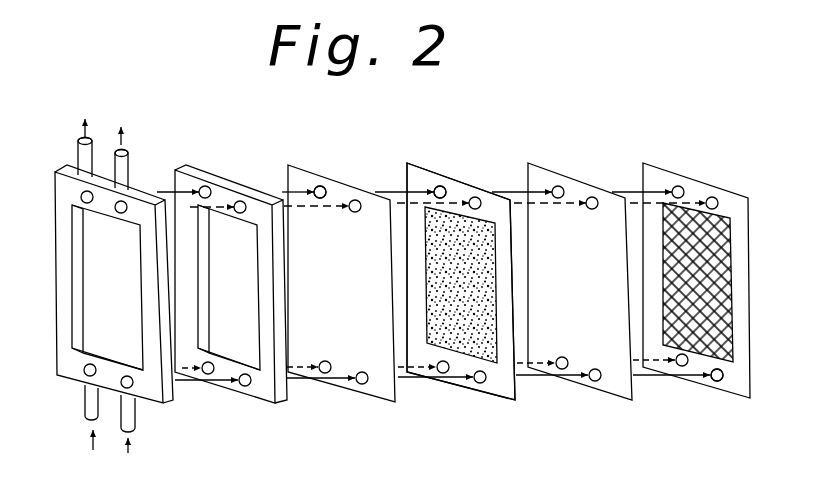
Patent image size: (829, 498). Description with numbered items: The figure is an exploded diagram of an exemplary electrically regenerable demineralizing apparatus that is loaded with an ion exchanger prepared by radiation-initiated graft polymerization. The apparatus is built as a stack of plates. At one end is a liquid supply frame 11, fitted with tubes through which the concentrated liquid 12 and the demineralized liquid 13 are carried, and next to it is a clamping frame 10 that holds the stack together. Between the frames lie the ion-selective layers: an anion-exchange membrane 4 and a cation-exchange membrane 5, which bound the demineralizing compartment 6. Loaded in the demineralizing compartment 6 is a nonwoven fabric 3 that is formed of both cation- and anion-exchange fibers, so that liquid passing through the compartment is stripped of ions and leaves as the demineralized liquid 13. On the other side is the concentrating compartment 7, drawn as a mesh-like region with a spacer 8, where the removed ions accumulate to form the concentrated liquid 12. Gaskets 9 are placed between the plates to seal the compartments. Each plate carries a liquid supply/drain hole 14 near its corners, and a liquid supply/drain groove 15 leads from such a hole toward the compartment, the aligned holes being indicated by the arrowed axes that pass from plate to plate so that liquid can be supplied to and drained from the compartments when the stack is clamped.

The nonwoven fabric 3 is at (466, 328).
The anion-exchange membrane 4 is at (378, 388).
The cation-exchange membrane 5 is at (618, 378).
The demineralizing compartment 6 is at (522, 387).
The concentrating compartment 7 is at (733, 297).
The spacer 8 is at (723, 375).
The gaskets 9 is at (500, 387).
The clamping frame 10 is at (267, 390).
The liquid supply frame 11 is at (168, 395).
The concentrated liquid 12 is at (87, 303).
The demineralized liquid 13 is at (132, 307).
The liquid supply/drain hole 14 is at (322, 186).
The liquid supply/drain groove 15 is at (445, 186).